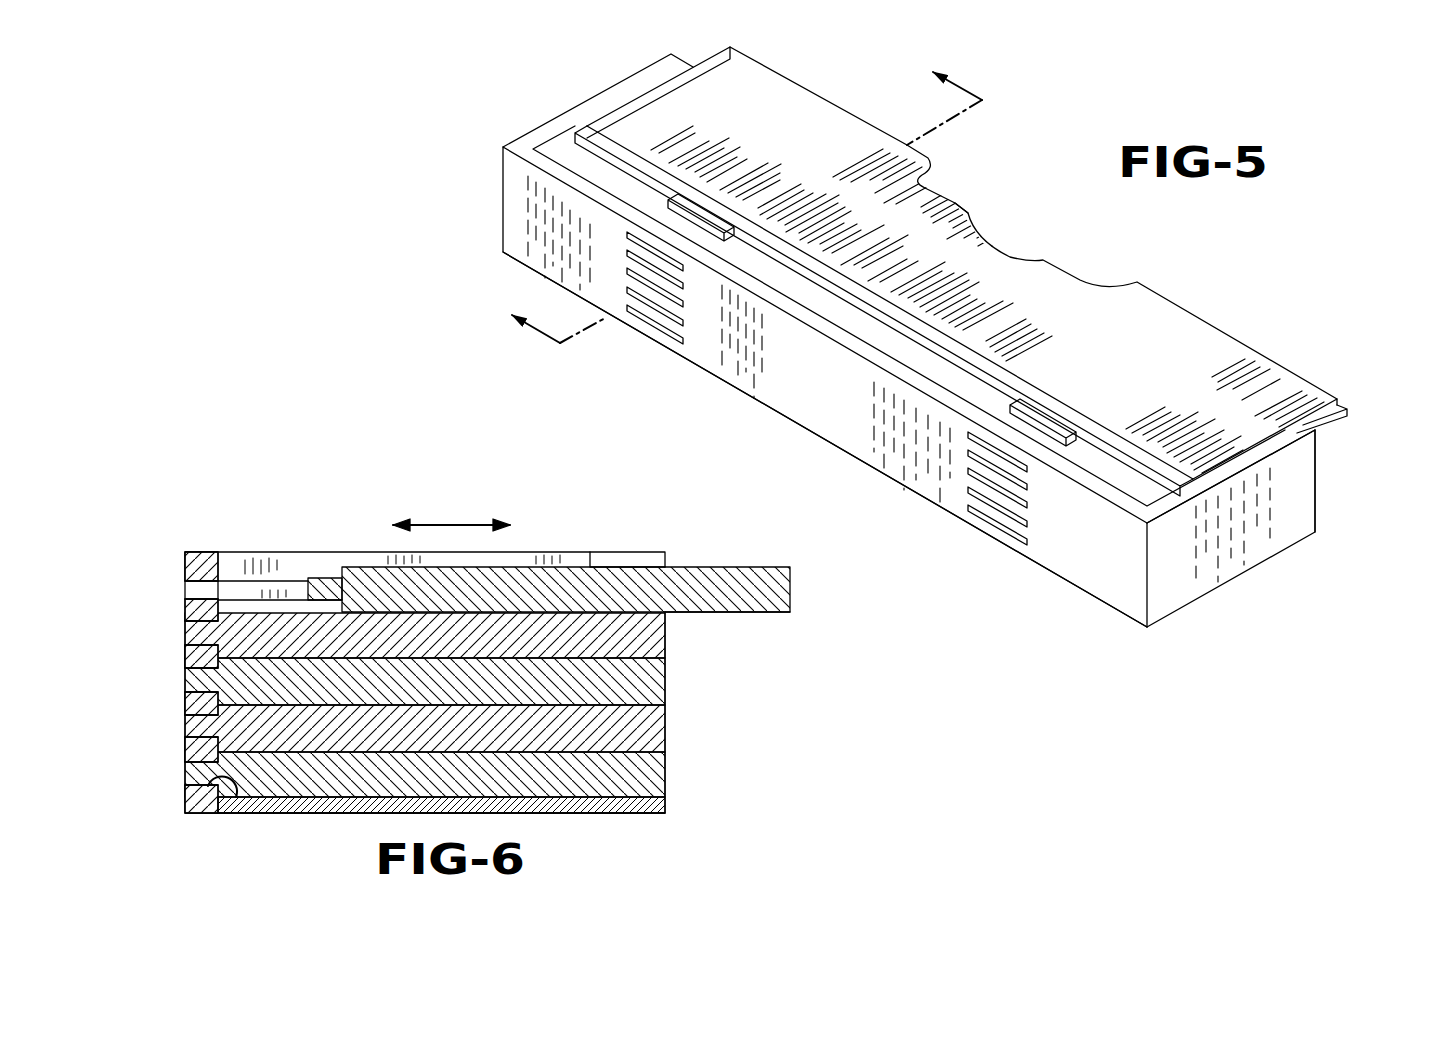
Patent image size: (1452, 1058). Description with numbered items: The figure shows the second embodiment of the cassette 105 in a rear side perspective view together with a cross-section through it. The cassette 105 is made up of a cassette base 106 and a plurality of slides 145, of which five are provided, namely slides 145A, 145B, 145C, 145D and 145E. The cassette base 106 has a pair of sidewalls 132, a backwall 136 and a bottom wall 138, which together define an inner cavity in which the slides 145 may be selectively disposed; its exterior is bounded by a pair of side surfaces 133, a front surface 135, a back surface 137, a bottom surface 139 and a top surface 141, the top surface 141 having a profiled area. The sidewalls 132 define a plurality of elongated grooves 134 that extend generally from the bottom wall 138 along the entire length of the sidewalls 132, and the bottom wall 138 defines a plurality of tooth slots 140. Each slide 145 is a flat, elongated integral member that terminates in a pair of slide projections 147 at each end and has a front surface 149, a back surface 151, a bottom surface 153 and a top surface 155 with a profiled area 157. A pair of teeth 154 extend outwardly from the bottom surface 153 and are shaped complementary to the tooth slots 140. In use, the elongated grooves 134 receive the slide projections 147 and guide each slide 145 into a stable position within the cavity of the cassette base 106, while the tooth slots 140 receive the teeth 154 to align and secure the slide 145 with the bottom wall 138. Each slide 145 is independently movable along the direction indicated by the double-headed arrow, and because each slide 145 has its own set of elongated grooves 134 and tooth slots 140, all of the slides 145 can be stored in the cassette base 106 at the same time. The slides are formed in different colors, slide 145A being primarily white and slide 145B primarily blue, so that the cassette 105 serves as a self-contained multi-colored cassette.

In FIG. 5, the cassette 105 is at (1210, 283).
In FIG. 6, the cassette 105 is at (293, 460).
In FIG. 5, the cassette base 106 is at (500, 177).
In FIG. 6, the cassette base 106 is at (633, 813).
In FIG. 5, the sidewalls 132 is at (573, 93).
In FIG. 6, the sidewalls 132 is at (385, 553).
In FIG. 5, the side surfaces 133 is at (627, 76).
In FIG. 6, the elongated grooves 134 is at (290, 582).
In FIG. 5, the front surface 135 is at (532, 132).
In FIG. 6, the backwall 136 is at (547, 815).
In FIG. 6, the back surface 137 is at (313, 817).
In FIG. 5, the bottom wall 138 is at (805, 417).
In FIG. 6, the bottom wall 138 is at (200, 547).
In FIG. 5, the bottom surface 139 is at (852, 433).
In FIG. 6, the bottom surface 139 is at (185, 613).
In FIG. 5, the tooth slots 140 is at (640, 238).
In FIG. 6, the tooth slots 140 is at (185, 588).
In FIG. 5, the top surface 141 is at (1316, 490).
In FIG. 5, the slides 145 is at (994, 271).
In FIG. 6, the slides 145 is at (520, 664).
In FIG. 5, the slide 145A is at (1213, 322).
In FIG. 6, the slide 145A is at (518, 567).
In FIG. 6, the slide 145B is at (668, 633).
In FIG. 6, the slide 145C is at (668, 680).
In FIG. 6, the slide 145D is at (668, 727).
In FIG. 6, the slide 145E is at (668, 773).
In FIG. 5, the slide projections 147 is at (1338, 423).
In FIG. 5, the front surface 149 is at (858, 174).
In FIG. 6, the front surface 149 is at (595, 563).
In FIG. 6, the back surface 151 is at (757, 615).
In FIG. 5, the bottom surface 153 is at (895, 325).
In FIG. 6, the bottom surface 153 is at (318, 580).
In FIG. 5, the teeth 154 is at (628, 275).
In FIG. 6, the teeth 154 is at (283, 585).
In FIG. 5, the top surface 155 is at (1300, 370).
In FIG. 6, the top surface 155 is at (790, 590).
In FIG. 5, the profiled area 157 is at (957, 203).